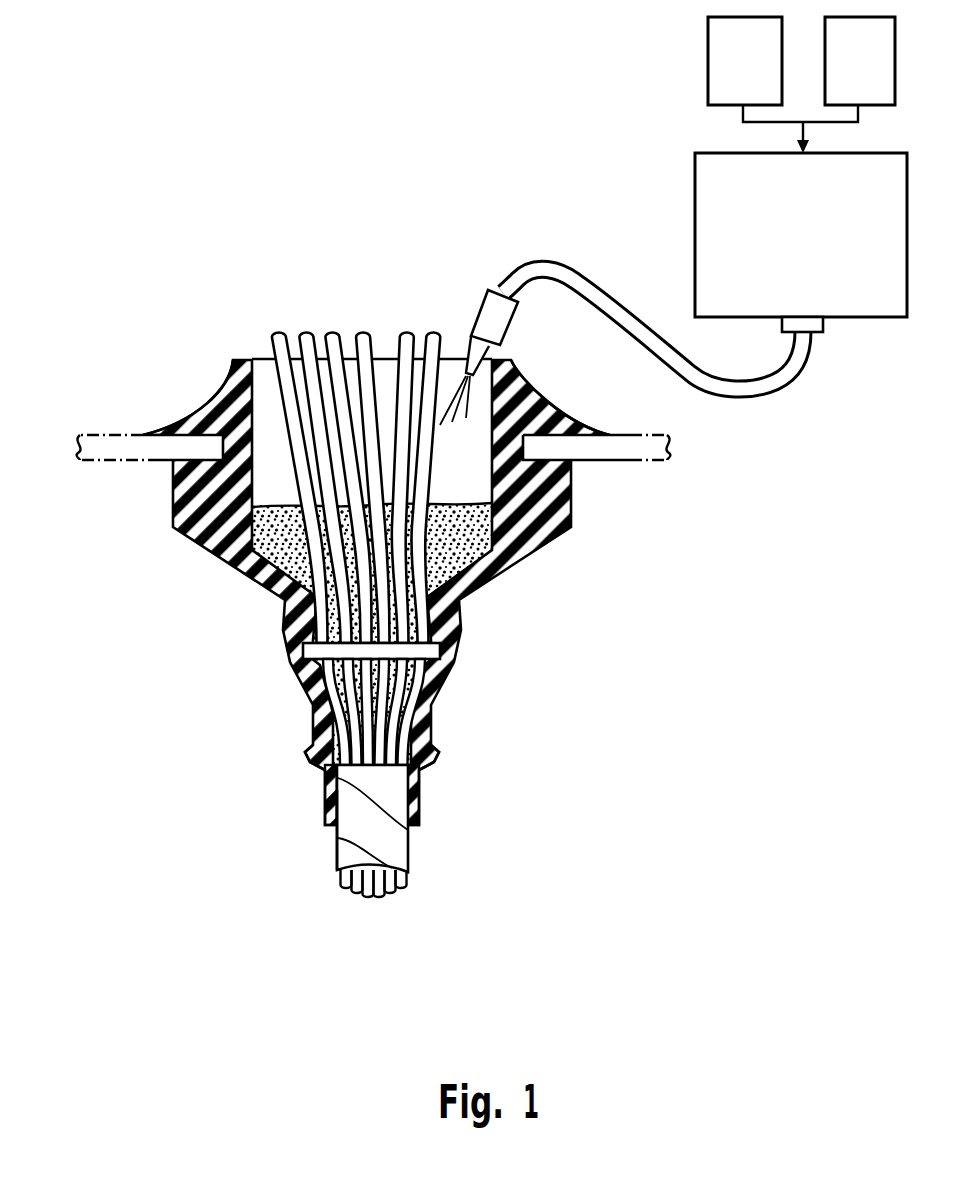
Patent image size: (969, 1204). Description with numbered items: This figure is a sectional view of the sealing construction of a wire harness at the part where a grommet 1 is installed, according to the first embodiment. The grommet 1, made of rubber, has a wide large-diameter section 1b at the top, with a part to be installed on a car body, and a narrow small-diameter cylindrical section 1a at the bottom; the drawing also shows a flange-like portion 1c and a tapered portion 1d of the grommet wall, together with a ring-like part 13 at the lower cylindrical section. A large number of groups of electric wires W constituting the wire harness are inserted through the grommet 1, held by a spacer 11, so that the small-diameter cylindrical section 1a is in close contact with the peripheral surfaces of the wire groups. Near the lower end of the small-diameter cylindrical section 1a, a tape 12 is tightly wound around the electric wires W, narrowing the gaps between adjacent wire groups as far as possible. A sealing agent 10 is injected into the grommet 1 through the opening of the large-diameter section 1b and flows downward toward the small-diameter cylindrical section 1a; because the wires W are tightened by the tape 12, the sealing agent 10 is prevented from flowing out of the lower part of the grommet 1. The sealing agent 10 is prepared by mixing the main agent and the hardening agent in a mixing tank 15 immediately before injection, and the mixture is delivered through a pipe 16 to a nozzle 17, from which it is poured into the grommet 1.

The grommet 1 is at (346, 592).
The small-diameter cylindrical section 1a is at (312, 772).
The large-diameter section 1b is at (173, 498).
The flange 1c is at (173, 460).
The tapered guide portion 1d is at (173, 428).
The sealing agent 10 is at (472, 406).
The spacer 11 is at (307, 648).
The tape 12 is at (403, 848).
The fastening ring 13 is at (430, 775).
The mixing tank 15 is at (694, 172).
The pipe 16 is at (790, 386).
The nozzle 17 is at (480, 310).
The electric wires W is at (351, 637).